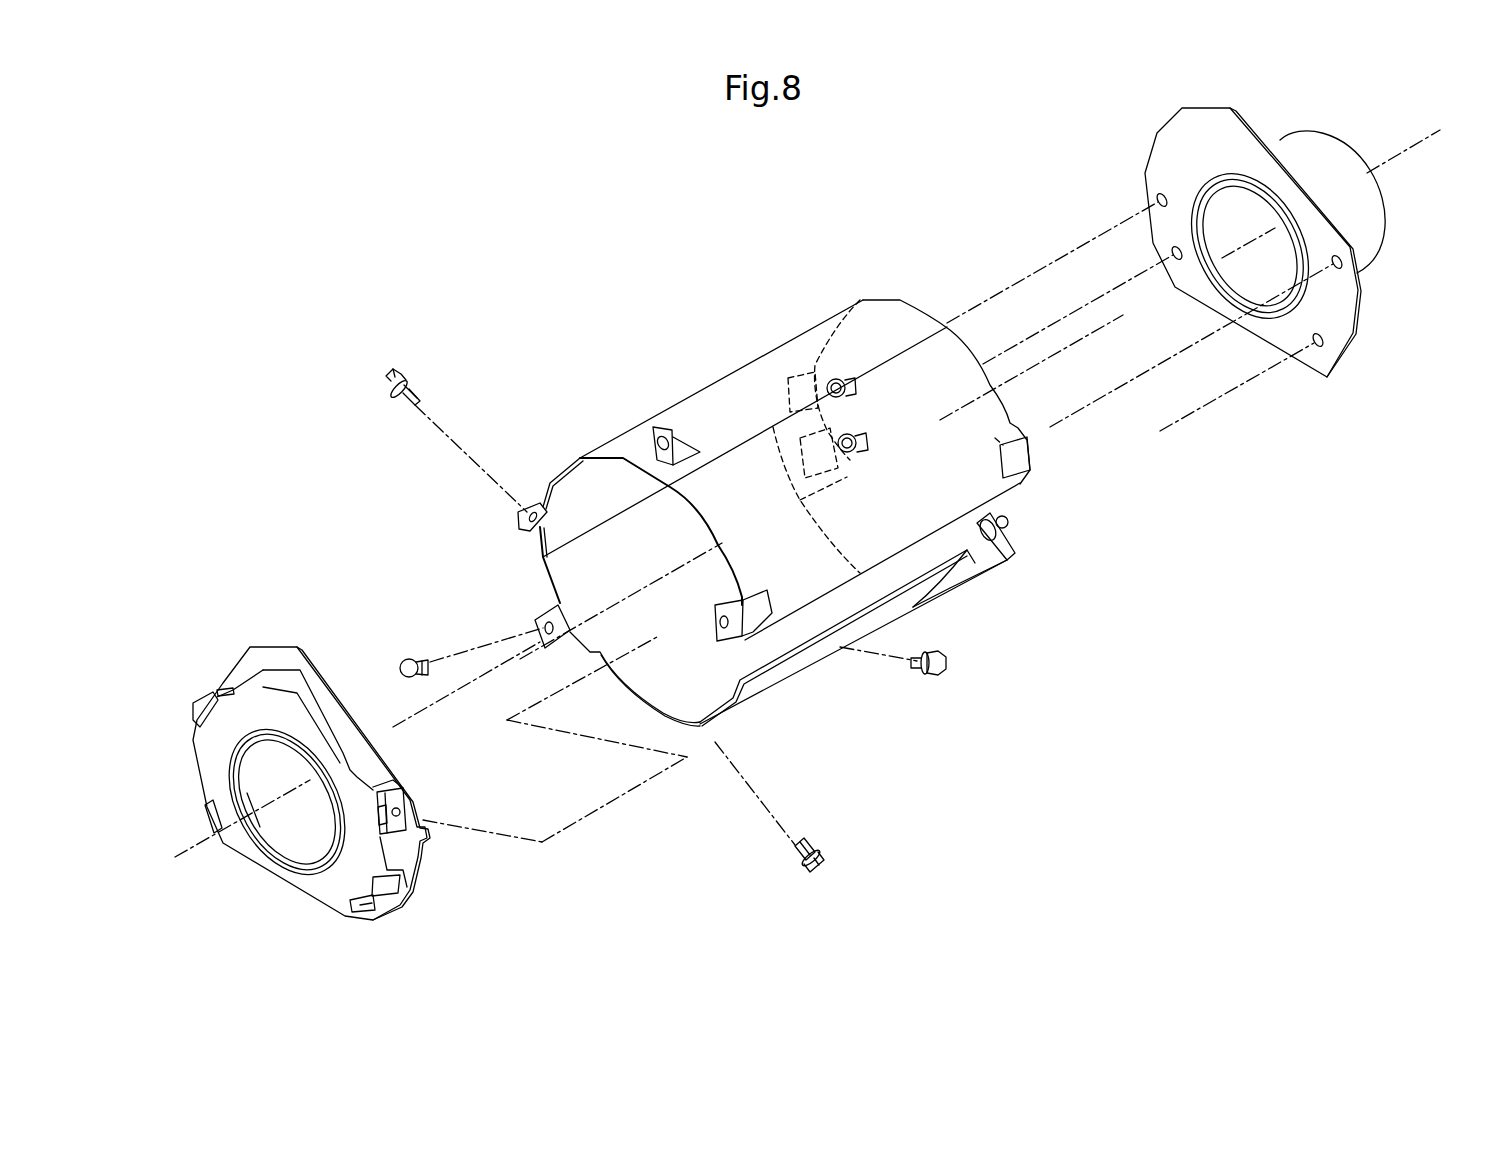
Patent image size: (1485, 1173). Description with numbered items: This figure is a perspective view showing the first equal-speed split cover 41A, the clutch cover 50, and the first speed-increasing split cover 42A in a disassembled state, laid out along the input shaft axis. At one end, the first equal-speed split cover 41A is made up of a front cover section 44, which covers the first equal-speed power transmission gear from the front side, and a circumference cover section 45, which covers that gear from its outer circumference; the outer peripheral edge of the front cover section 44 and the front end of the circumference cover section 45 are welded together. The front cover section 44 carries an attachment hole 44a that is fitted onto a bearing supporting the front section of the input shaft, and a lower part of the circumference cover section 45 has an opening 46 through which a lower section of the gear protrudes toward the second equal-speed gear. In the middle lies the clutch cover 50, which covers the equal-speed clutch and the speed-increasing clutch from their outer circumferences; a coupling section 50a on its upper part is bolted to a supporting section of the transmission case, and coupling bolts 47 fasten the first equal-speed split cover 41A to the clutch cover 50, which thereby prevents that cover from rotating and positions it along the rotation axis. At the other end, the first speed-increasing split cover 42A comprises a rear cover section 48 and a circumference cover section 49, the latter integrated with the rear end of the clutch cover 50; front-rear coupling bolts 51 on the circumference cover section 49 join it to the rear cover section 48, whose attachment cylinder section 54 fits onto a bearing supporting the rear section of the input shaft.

The first equal-speed split cover 41A is at (188, 638).
The first speed-increasing split cover 42A is at (1115, 120).
The front cover section 44 is at (207, 760).
The attachment hole 44a is at (280, 843).
The circumference cover section 45 is at (283, 683).
The opening 46 is at (322, 912).
The coupling bolt 47 is at (398, 378).
The rear cover section 48 is at (1167, 167).
The circumference cover section 49 is at (878, 320).
The clutch cover 50 is at (735, 393).
The coupling section 50a is at (657, 435).
The front-rear coupling bolt 51 is at (848, 388).
The attachment cylinder section 54 is at (1365, 228).